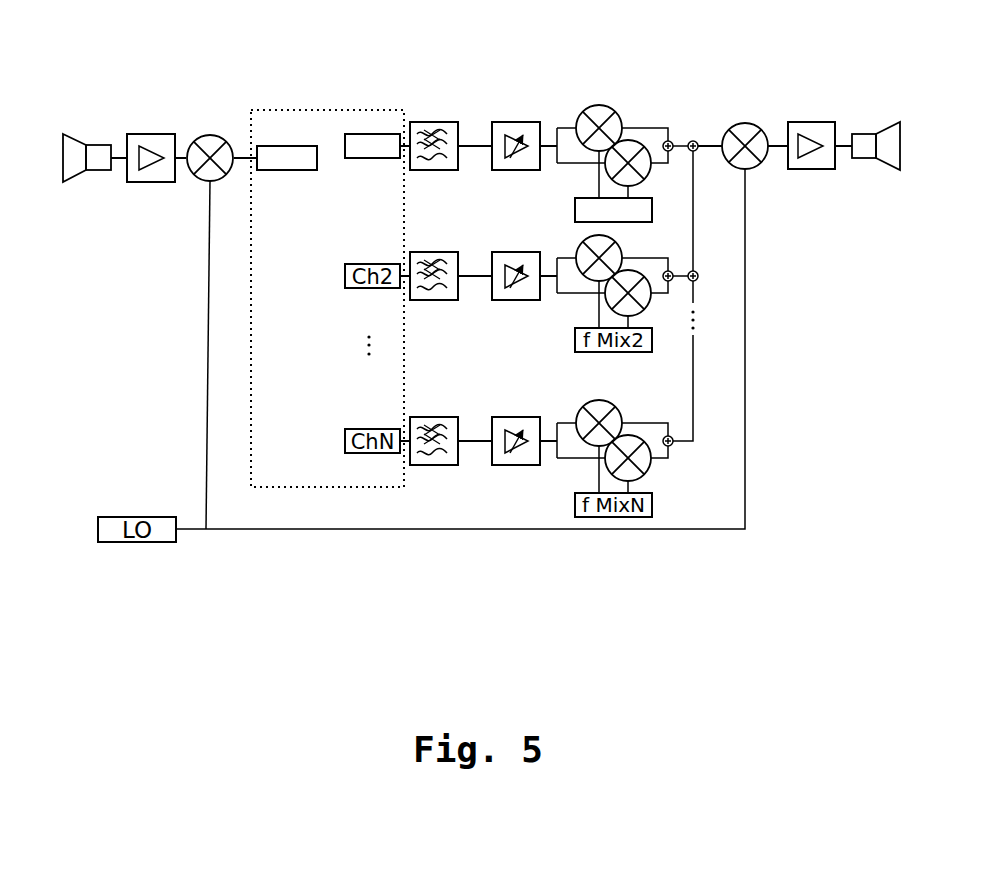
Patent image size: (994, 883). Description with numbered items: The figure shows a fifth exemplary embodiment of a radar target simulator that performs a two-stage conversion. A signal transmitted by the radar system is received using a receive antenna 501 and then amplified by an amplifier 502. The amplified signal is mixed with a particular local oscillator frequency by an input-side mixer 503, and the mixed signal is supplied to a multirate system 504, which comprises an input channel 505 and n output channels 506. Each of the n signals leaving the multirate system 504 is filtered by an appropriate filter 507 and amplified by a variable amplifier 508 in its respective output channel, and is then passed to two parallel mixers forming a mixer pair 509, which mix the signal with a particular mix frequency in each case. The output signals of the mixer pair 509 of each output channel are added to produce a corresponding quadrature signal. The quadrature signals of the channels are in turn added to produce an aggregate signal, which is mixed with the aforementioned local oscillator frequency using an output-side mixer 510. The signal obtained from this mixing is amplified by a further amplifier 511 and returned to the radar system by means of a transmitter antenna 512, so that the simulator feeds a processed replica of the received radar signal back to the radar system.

The receive antenna 501 is at (75, 140).
The amplifier 502 is at (160, 140).
The input-side mixer 503 is at (215, 142).
The multirate system 504 is at (334, 115).
The input channel 505 is at (273, 172).
The output channels 506 is at (376, 130).
The filter 507 is at (429, 118).
The variable amplifier 508 is at (515, 118).
The mixer pair 509 is at (612, 102).
The output-side mixer 510 is at (741, 130).
The amplifier 511 is at (817, 130).
The transmitter antenna 512 is at (892, 130).